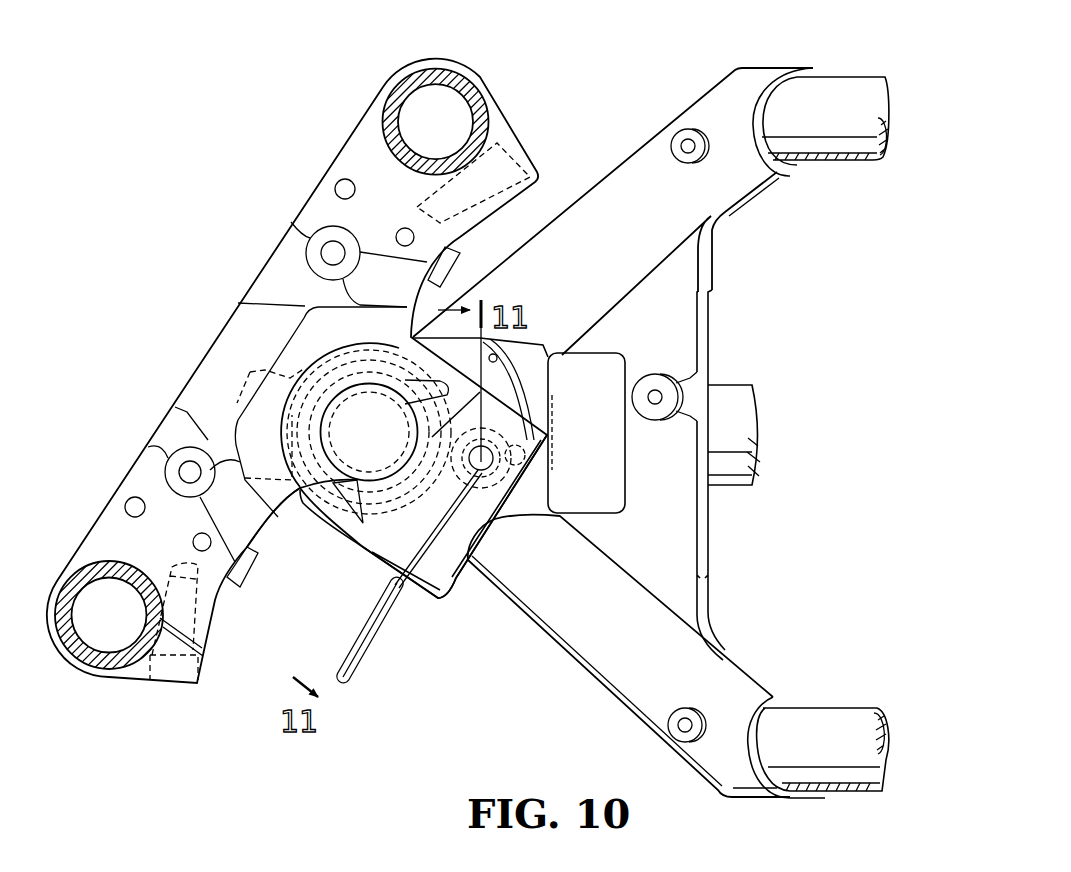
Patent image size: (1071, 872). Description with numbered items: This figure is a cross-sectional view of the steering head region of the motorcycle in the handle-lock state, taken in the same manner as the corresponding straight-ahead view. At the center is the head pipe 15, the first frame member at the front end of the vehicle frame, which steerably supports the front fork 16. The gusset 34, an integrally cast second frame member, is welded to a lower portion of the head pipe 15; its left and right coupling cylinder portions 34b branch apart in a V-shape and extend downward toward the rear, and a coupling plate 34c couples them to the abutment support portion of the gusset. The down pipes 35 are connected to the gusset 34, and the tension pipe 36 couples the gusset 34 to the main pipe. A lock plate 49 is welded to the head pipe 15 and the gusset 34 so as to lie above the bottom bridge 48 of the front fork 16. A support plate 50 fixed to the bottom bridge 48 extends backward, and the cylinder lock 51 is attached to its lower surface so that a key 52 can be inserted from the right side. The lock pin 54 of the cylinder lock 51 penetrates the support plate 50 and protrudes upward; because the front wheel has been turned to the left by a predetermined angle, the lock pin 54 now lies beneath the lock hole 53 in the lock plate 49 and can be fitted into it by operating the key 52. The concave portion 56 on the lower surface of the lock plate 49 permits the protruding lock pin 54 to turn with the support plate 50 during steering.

The front fork 16 is at (298, 200).
The bottom bridge 48 is at (262, 302).
The head pipe 15 is at (310, 382).
The support plate 50 is at (362, 545).
The cylinder lock 51 is at (512, 520).
The key 52 is at (385, 638).
The lock hole 53 is at (552, 478).
The lock pin 54 is at (576, 427).
The lock plate 49 is at (545, 347).
The concave portion 56 is at (533, 352).
The gusset 34 is at (630, 152).
The coupling cylinder portions 34b is at (592, 205).
The coupling plate 34c is at (672, 517).
The down pipes 35 is at (848, 92).
The tension pipe 36 is at (737, 395).